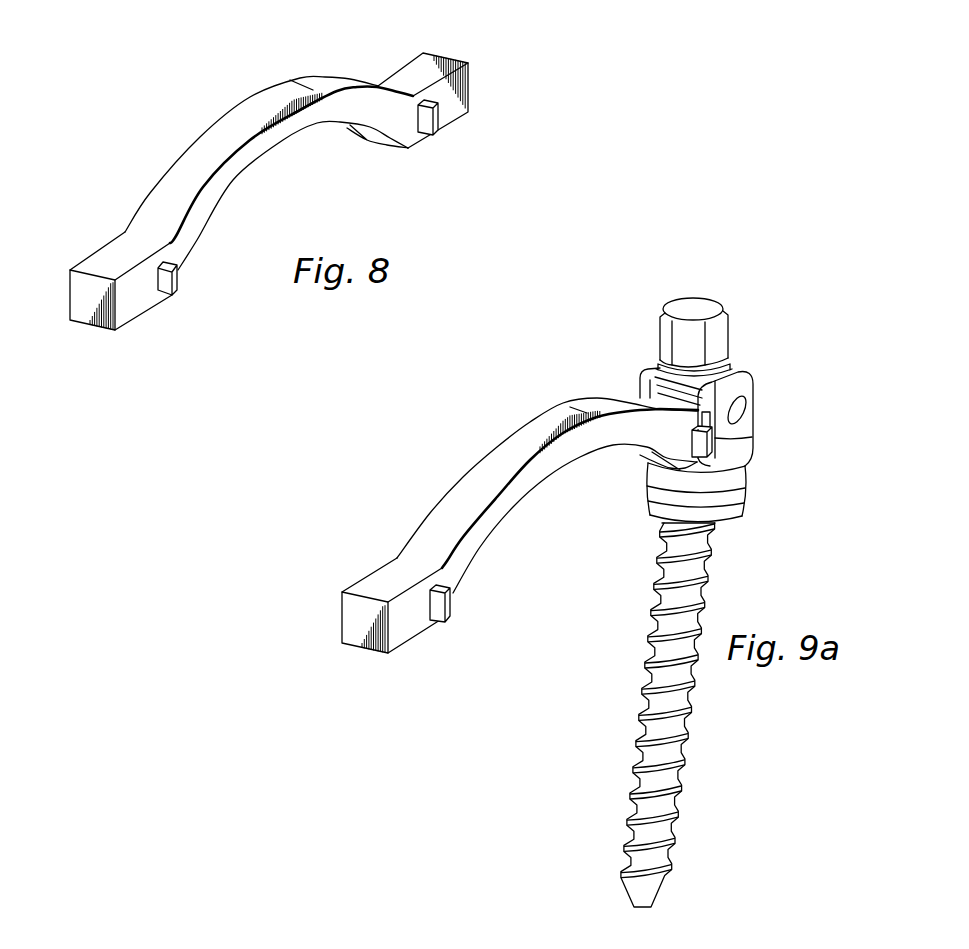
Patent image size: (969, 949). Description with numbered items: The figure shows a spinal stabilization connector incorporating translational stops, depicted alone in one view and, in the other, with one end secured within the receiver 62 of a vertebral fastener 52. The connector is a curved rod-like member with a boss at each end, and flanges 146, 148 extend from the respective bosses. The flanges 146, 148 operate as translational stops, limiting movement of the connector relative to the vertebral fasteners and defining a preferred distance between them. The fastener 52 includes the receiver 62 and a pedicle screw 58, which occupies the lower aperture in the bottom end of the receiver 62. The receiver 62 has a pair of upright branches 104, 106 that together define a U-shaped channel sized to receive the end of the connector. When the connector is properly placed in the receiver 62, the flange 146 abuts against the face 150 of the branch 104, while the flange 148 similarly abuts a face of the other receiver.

In FIG. 8, the flange 146 is at (435, 136).
In FIG. 9A, the flange 146 is at (713, 452).
In FIG. 8, the flange 148 is at (180, 280).
In FIG. 9A, the flange 148 is at (453, 600).
In FIG. 9A, the fastener 52 is at (749, 346).
In FIG. 9A, the upright branch 106 is at (638, 391).
In FIG. 9A, the upright branch 104 is at (741, 461).
In FIG. 9A, the face 150 is at (733, 425).
In FIG. 9A, the receiver 62 is at (716, 483).
In FIG. 9A, the pedicle screw 58 is at (684, 778).